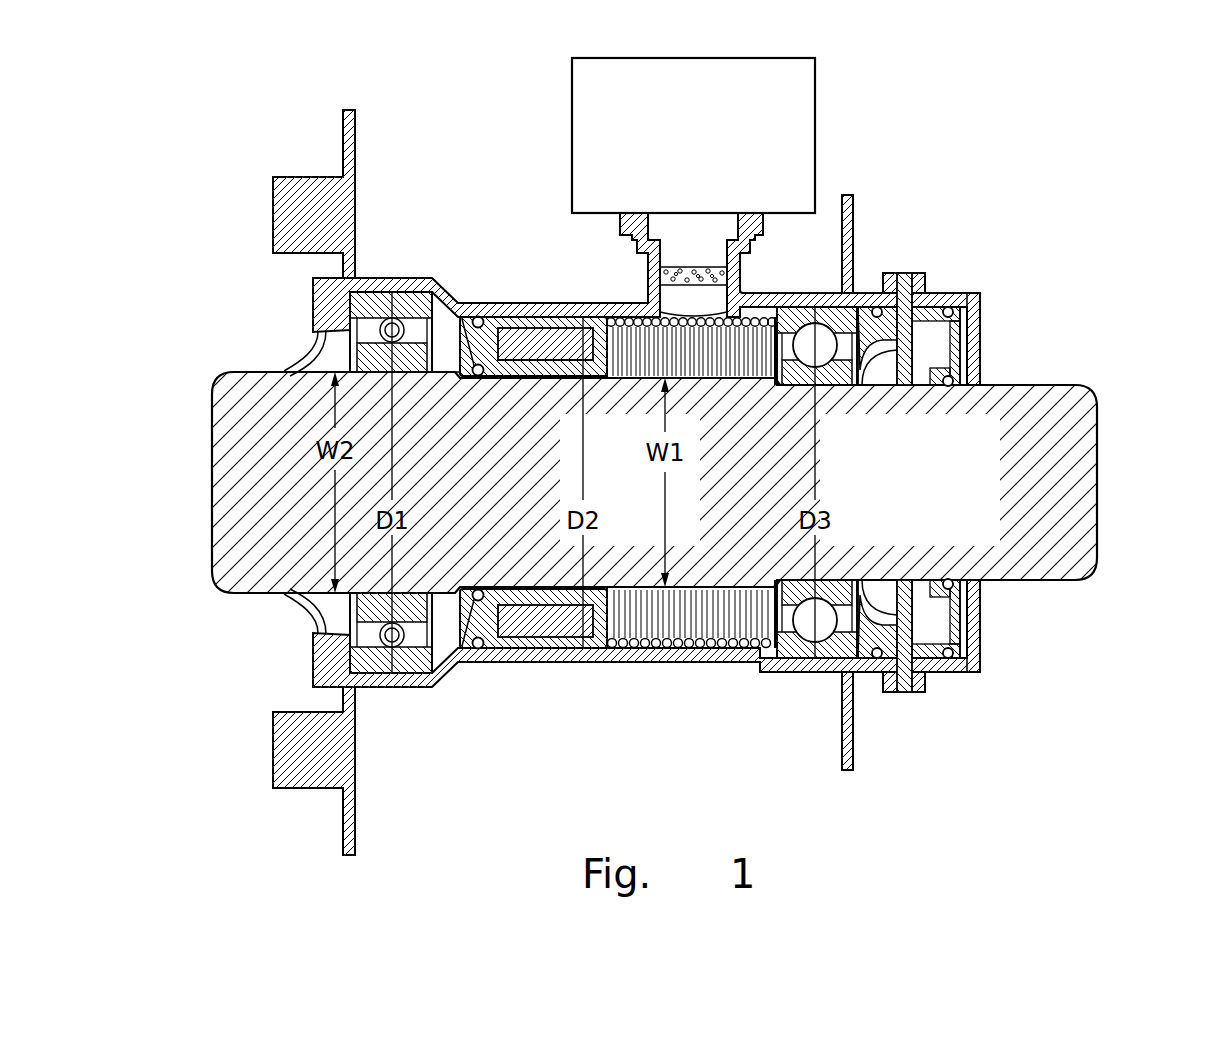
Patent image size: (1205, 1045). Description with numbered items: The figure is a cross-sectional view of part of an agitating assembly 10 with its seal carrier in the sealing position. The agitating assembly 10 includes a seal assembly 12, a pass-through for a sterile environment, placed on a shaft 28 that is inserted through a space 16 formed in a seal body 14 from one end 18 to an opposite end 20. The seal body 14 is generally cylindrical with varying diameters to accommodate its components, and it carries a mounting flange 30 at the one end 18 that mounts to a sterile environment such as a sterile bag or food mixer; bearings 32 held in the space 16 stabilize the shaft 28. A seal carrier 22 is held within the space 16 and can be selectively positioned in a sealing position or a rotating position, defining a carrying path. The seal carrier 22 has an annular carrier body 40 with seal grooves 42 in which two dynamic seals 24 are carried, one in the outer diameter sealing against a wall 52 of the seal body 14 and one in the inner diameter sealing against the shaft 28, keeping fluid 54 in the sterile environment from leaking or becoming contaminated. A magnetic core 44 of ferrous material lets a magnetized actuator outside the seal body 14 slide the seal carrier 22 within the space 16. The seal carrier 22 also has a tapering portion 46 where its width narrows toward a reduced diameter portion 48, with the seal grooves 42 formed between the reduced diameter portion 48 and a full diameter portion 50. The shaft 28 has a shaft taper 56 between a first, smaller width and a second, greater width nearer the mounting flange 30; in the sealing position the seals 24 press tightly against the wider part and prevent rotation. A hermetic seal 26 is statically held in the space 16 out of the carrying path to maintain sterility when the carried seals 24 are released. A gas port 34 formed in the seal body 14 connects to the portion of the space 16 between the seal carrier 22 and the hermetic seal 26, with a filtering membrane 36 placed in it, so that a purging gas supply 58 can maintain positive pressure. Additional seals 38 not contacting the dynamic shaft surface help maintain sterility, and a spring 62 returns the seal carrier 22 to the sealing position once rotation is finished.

The agitating assembly 10 is at (1065, 232).
The seal assembly 12 is at (893, 240).
The seal body 14 is at (600, 303).
The space 16 is at (618, 318).
The one end 18 is at (312, 285).
The opposite end 20 is at (985, 296).
The seal carrier 22 is at (497, 438).
The seal 24 is at (478, 316).
The hermetic seal 26 is at (952, 382).
The shaft 28 is at (1075, 412).
The mounting flange 30 is at (356, 820).
The bearing 32 is at (365, 600).
The gas port 34 is at (742, 282).
The filtering membrane 36 is at (700, 268).
The additional seal 38 is at (885, 293).
The carrier body 40 is at (508, 370).
The seal groove 42 is at (468, 330).
The magnetic core 44 is at (538, 362).
The tapering portion 46 is at (461, 374).
The reduced diameter portion 48 is at (446, 374).
The full diameter portion 50 is at (500, 378).
The wall 52 is at (481, 316).
The fluid 54 is at (227, 348).
The shaft taper 56 is at (483, 594).
The purging gas supply 58 is at (818, 106).
The spring 62 is at (757, 300).